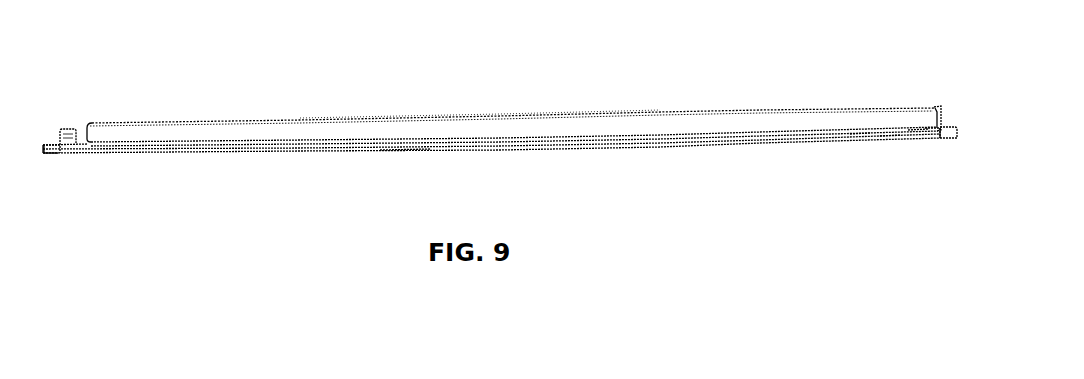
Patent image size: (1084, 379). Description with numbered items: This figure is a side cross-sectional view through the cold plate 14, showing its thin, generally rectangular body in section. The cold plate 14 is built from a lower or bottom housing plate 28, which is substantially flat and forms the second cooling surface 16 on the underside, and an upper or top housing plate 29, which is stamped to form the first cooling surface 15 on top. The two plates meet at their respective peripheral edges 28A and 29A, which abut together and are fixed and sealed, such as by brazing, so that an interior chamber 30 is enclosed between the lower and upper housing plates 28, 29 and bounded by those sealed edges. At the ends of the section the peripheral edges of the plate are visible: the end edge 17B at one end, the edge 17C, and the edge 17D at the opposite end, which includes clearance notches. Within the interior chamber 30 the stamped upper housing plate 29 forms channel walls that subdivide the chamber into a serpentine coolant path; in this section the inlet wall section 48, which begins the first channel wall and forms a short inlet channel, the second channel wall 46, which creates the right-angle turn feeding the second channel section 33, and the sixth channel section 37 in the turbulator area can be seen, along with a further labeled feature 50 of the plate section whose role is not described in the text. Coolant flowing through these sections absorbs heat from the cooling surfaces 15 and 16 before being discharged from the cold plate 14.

The cold plate 14 is at (732, 102).
The first cooling surface 15 is at (547, 122).
The second cooling surface 16 is at (633, 148).
The peripheral edge 17B is at (950, 140).
The peripheral edge 17C is at (88, 124).
The peripheral edge 17D is at (46, 146).
The lower housing plate 28 is at (243, 152).
The peripheral edge of lower housing plate 28A is at (84, 154).
The upper housing plate 29 is at (237, 121).
The peripheral edge of upper housing plate 29A is at (69, 129).
The interior chamber 30 is at (408, 150).
The second channel section 33 is at (918, 131).
The sixth channel section 37 is at (860, 136).
The second channel wall 46 is at (892, 141).
The inlet wall section 48 is at (547, 150).
The upper layer 50 is at (828, 143).